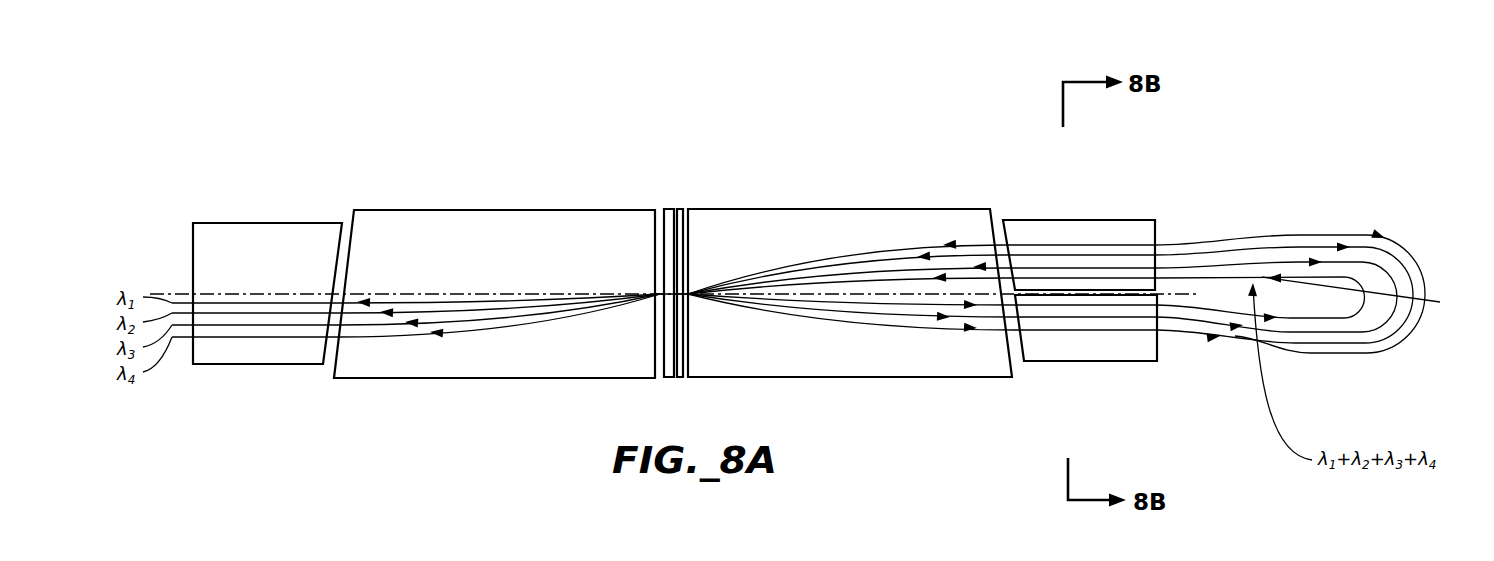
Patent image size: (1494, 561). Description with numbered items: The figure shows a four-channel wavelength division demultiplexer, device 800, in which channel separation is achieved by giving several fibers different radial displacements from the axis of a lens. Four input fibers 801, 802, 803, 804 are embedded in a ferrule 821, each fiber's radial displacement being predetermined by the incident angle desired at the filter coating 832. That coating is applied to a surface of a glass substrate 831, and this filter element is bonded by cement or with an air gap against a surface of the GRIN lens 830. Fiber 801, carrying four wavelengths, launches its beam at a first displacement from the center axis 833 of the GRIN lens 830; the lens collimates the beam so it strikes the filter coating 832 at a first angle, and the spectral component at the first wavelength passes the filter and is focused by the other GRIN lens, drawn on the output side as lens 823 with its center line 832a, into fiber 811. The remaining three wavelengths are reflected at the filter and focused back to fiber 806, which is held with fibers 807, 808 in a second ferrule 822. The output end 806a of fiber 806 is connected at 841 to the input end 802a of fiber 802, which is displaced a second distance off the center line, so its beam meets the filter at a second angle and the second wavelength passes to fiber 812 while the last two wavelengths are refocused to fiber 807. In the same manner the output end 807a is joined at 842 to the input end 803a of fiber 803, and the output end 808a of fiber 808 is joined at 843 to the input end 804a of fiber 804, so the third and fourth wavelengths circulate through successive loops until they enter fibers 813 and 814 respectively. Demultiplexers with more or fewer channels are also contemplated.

The device 800 is at (604, 112).
The input GRIN lens 823 is at (244, 214).
The fiber 811 is at (249, 307).
The fiber 812 is at (273, 320).
The fiber 813 is at (297, 331).
The fiber 814 is at (317, 343).
The filter coating 832 is at (514, 205).
The optical axis of lens 832 832a is at (386, 290).
The glass substrate 831 is at (669, 204).
The GRIN lens 830 is at (774, 205).
The center axis 833 is at (830, 290).
The ferrule 821 is at (1032, 214).
The lower filter block 822 is at (1049, 372).
The input fiber 801 is at (1115, 275).
The input fiber 802 is at (1090, 263).
The input fiber 803 is at (1065, 250).
The input fiber 804 is at (1038, 240).
The input end 802a is at (1236, 255).
The output path of channel 3 803a is at (1221, 245).
The output path of channel 4 804a is at (1198, 234).
The fiber 806 is at (1126, 311).
The fiber 807 is at (1101, 323).
The return channel 8 808 is at (1078, 340).
The output end 806a is at (1297, 324).
The return path 7 807a is at (1336, 337).
The return path 8 808a is at (1384, 353).
The connection 841 is at (1319, 256).
The fiber loop 2 842 is at (1359, 238).
The fiber loop 3 843 is at (1400, 245).